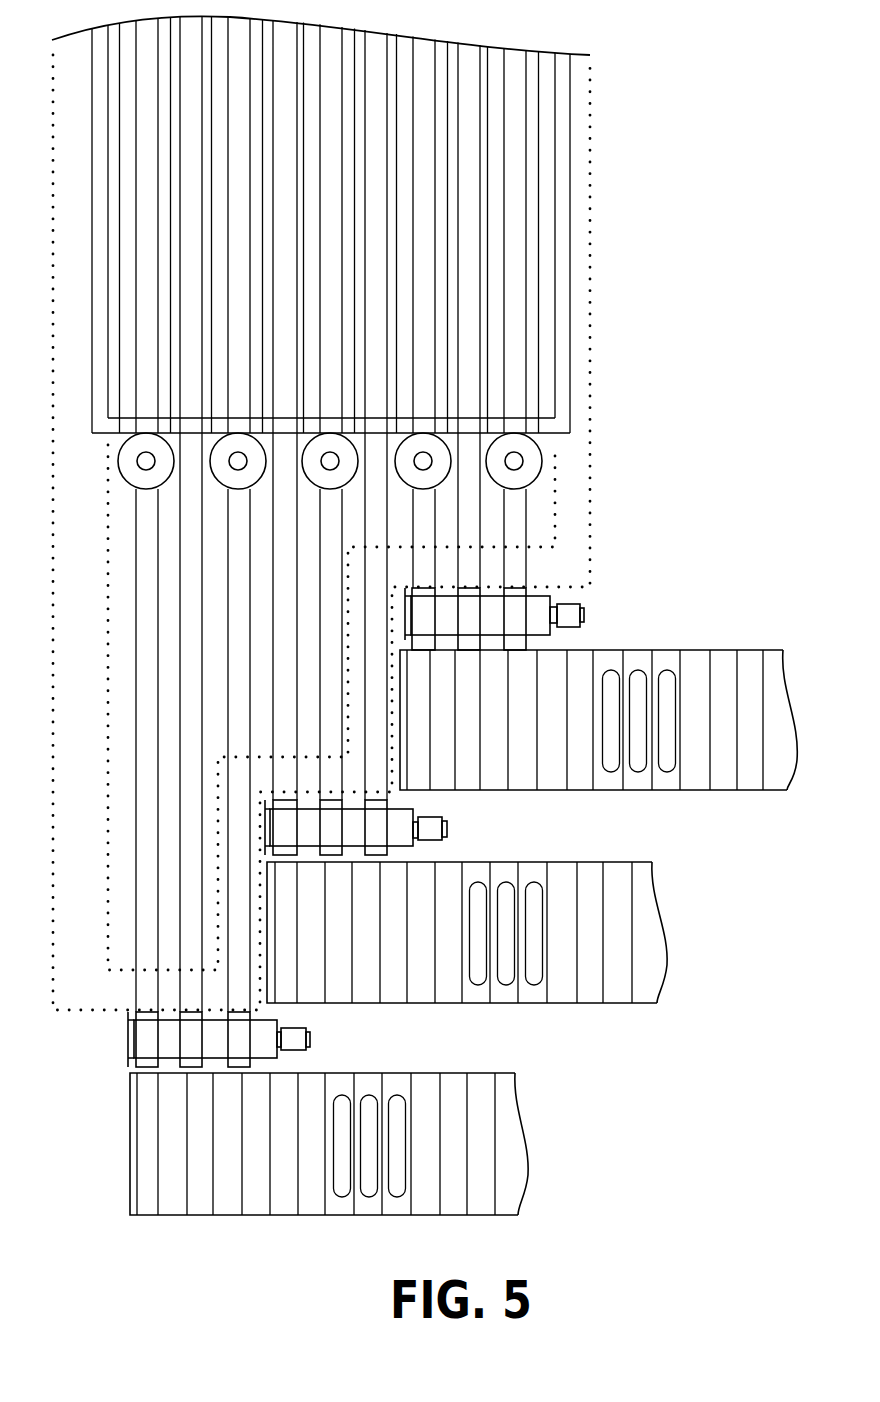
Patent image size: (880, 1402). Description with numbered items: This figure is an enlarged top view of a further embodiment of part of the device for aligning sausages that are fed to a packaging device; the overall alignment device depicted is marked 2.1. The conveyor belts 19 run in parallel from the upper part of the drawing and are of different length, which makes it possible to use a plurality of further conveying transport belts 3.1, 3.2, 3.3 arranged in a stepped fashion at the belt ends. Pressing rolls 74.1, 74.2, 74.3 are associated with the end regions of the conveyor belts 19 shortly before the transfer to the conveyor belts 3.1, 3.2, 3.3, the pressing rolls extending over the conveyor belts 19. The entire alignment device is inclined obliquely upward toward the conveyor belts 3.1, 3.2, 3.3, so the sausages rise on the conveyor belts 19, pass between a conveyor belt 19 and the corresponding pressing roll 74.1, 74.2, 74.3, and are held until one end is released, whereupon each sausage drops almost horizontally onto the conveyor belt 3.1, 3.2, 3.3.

The conveyor module 2.1 is at (645, 163).
The conveyor belts 19 is at (513, 502).
The pressing roll 74.1 is at (556, 601).
The pressing roll 74.2 is at (358, 842).
The pressing roll 74.3 is at (207, 1060).
The conveyor belt 3.1 is at (697, 657).
The conveyor belt 3.2 is at (565, 872).
The conveyor belt 3.3 is at (453, 1090).